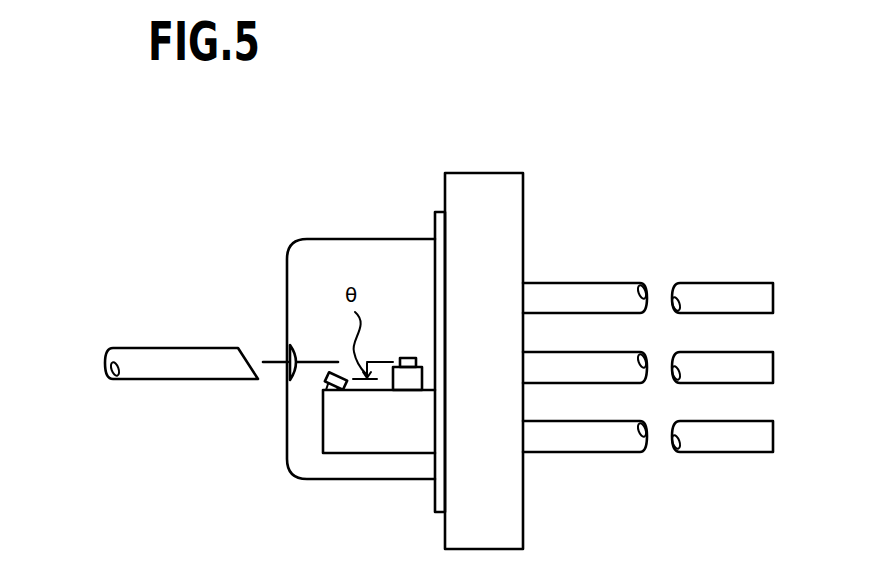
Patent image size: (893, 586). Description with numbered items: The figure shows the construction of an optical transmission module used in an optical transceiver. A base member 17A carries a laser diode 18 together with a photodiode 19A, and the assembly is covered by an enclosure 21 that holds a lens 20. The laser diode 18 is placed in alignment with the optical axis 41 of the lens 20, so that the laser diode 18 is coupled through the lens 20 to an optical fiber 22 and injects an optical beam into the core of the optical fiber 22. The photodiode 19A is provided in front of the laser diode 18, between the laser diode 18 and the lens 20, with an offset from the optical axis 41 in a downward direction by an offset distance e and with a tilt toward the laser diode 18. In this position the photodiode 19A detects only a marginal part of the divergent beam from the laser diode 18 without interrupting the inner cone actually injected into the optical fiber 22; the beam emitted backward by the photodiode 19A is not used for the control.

The enclosure 21 is at (308, 238).
The optical axis 41 is at (316, 355).
The optical fiber 22 is at (137, 347).
The lens 20 is at (288, 347).
The laser diode 18 is at (408, 358).
The photodiode 19A is at (328, 390).
The base member 17A is at (372, 433).